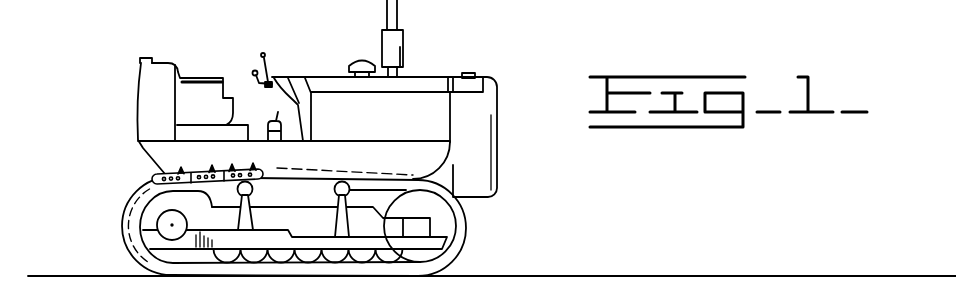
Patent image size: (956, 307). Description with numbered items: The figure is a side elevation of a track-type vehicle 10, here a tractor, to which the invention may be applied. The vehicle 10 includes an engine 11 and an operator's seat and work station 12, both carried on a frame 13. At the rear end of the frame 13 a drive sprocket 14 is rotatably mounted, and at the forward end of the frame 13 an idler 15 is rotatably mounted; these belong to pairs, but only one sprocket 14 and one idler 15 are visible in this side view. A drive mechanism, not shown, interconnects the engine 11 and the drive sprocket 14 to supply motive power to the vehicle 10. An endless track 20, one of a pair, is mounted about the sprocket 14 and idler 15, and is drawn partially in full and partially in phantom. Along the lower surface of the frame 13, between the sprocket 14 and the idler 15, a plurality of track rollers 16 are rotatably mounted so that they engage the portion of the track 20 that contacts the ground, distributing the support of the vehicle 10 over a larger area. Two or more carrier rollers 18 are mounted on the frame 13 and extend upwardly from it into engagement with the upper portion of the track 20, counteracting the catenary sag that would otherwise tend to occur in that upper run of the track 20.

The track-type vehicle 10 is at (495, 53).
The engine 11 is at (407, 100).
The operator's seat and work station 12 is at (232, 73).
The frame 13 is at (307, 222).
The drive sprocket 14 is at (145, 230).
The idler 15 is at (443, 216).
The track rollers 16 is at (308, 265).
The carrier rollers 18 is at (334, 190).
The endless track 20 is at (151, 174).